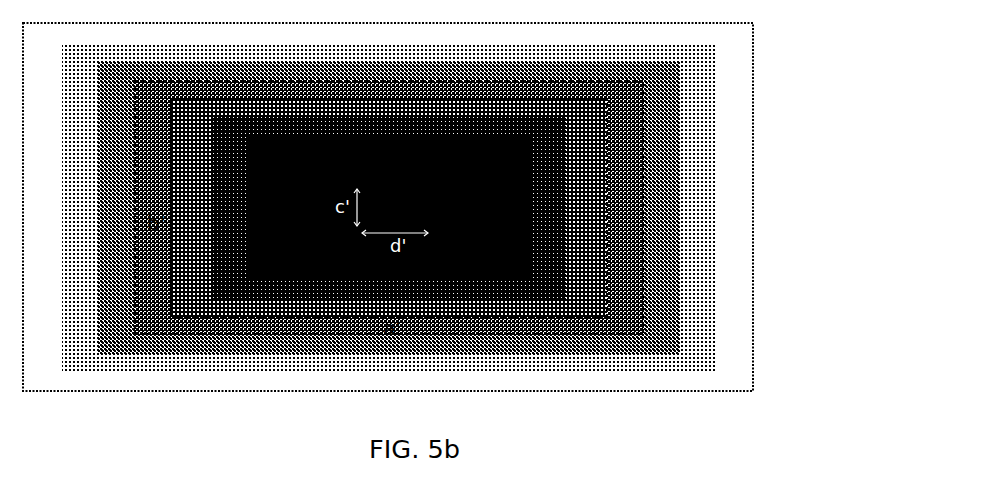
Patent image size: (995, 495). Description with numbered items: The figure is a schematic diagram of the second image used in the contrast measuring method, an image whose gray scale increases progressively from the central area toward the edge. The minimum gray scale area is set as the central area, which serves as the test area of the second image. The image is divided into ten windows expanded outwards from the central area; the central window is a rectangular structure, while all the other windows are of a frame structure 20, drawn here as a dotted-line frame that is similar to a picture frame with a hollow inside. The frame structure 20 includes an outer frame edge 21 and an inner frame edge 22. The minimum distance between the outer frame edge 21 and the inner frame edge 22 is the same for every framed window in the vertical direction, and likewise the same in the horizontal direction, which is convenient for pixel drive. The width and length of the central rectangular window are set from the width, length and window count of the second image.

The frame structure 20 is at (608, 203).
The outer frame edge 21 is at (643, 222).
The inner frame edge 22 is at (607, 230).